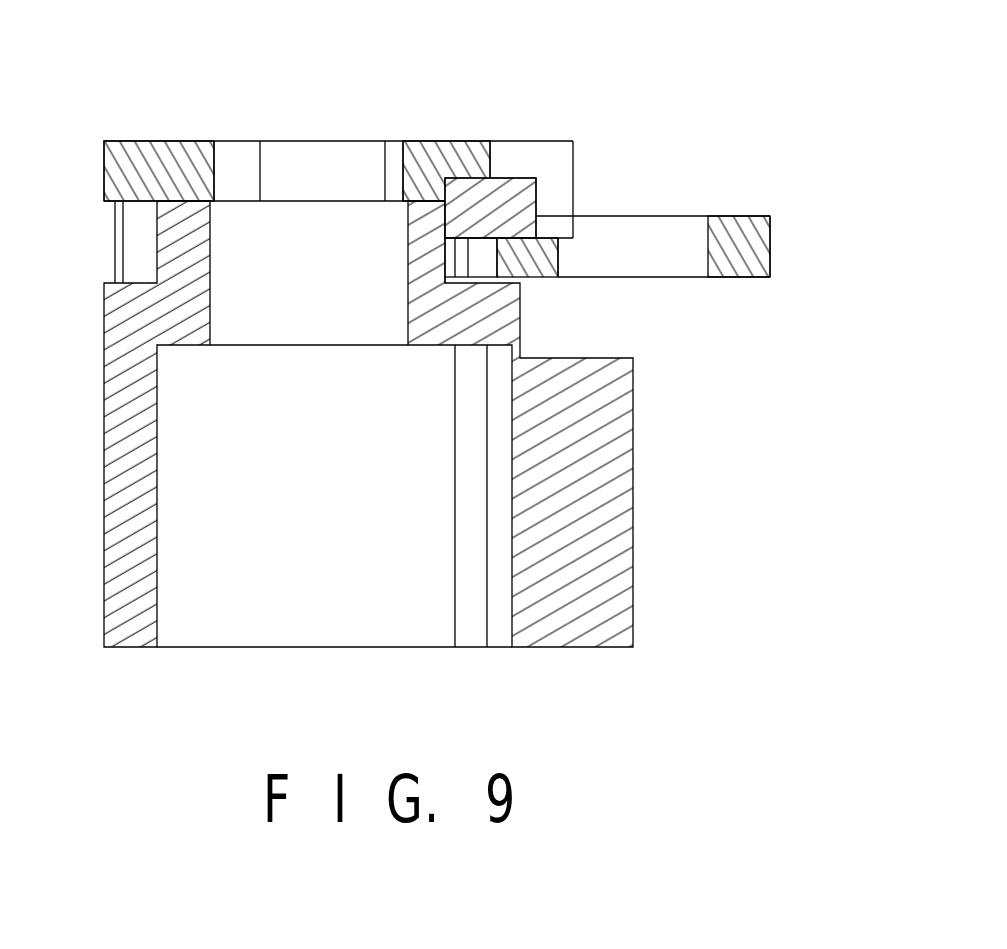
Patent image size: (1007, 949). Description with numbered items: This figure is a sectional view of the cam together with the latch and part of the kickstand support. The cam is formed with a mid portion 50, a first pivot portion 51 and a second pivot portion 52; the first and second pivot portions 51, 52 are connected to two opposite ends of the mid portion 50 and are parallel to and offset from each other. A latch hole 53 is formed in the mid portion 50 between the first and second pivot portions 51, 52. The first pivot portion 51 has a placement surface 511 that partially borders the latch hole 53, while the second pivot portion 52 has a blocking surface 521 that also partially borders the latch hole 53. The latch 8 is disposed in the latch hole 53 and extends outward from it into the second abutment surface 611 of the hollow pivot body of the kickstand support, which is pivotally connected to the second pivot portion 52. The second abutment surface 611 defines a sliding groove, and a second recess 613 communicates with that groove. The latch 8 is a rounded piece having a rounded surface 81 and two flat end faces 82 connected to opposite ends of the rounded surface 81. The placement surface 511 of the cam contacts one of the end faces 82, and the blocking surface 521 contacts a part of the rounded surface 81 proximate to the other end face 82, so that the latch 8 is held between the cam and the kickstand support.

The mid portion 50 is at (542, 142).
The second pivot portion 52 is at (160, 175).
The blocking surface 521 is at (443, 192).
The latch 8 is at (579, 163).
The latch hole 53 is at (579, 163).
The flat end faces 82 is at (507, 178).
The rounded surface 81 is at (535, 185).
The placement surface 511 is at (552, 238).
The first pivot portion 51 is at (735, 238).
The second abutment surface 611 is at (515, 239).
The second recess 613 is at (445, 273).